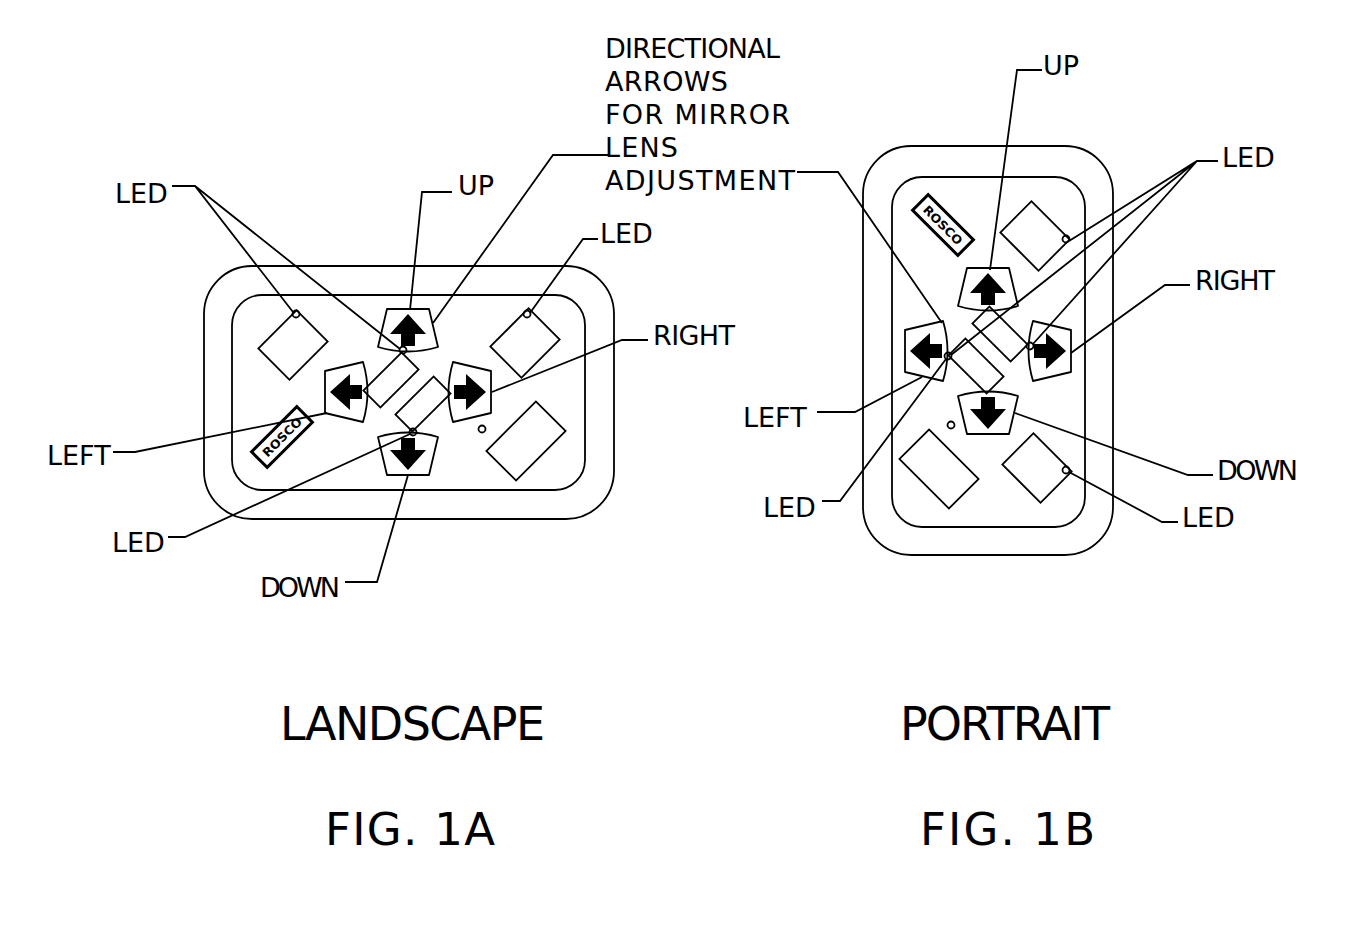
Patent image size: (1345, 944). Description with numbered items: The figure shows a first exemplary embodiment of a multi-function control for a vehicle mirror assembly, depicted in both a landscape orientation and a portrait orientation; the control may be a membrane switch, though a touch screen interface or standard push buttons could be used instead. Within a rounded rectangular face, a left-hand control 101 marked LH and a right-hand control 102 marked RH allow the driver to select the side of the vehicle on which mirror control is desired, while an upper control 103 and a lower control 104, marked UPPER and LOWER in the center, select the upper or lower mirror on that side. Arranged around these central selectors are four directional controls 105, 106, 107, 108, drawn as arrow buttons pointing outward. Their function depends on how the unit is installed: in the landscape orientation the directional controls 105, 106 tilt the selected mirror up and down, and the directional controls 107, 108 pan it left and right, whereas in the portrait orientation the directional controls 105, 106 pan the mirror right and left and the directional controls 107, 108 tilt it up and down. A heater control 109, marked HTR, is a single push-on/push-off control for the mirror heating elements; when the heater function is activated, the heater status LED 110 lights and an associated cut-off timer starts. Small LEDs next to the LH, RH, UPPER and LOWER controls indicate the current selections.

In FIG. 1A, the left-hand control 101 is at (277, 325).
In FIG. 1B, the left-hand control 101 is at (1050, 212).
In FIG. 1A, the right-hand control 102 is at (543, 320).
In FIG. 1B, the right-hand control 102 is at (1058, 488).
In FIG. 1A, the upper control 103 is at (377, 352).
In FIG. 1B, the upper control 103 is at (1030, 330).
In FIG. 1A, the lower control 104 is at (438, 428).
In FIG. 1B, the lower control 104 is at (958, 378).
In FIG. 1A, the directional control 105 is at (400, 310).
In FIG. 1B, the directional control 105 is at (1072, 363).
In FIG. 1A, the directional control 106 is at (387, 470).
In FIG. 1B, the directional control 106 is at (907, 338).
In FIG. 1A, the directional control 107 is at (327, 378).
In FIG. 1B, the directional control 107 is at (975, 270).
In FIG. 1A, the directional control 108 is at (492, 402).
In FIG. 1B, the directional control 108 is at (1018, 396).
In FIG. 1A, the heater control 109 is at (556, 468).
In FIG. 1B, the heater control 109 is at (923, 487).
In FIG. 1A, the heater status LED 110 is at (483, 433).
In FIG. 1B, the heater status LED 110 is at (953, 431).